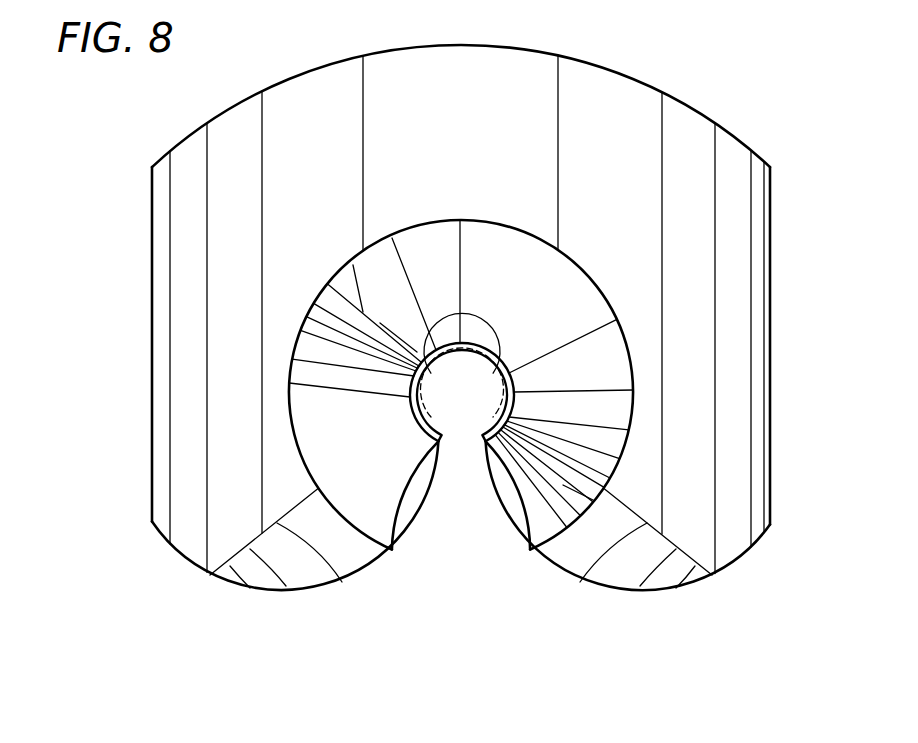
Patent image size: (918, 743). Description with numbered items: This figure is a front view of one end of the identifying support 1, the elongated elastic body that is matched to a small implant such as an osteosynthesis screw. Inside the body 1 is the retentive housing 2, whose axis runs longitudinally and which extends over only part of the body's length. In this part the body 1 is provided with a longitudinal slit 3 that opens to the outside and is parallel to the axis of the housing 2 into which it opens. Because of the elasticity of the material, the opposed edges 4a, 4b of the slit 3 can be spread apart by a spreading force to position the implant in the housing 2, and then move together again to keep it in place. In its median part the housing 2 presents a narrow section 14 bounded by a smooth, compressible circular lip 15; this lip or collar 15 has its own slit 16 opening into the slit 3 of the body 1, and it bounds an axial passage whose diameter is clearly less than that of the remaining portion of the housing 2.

The identifying support 1 is at (690, 91).
The retentive housing 2 is at (430, 344).
The longitudinal slit 3 is at (481, 503).
The opposed edge of slit 4a is at (488, 448).
The opposed edge of slit 4b is at (437, 444).
The narrow section 14 is at (478, 366).
The smooth circular lip 15 is at (469, 343).
The slit of lip 16 is at (459, 455).